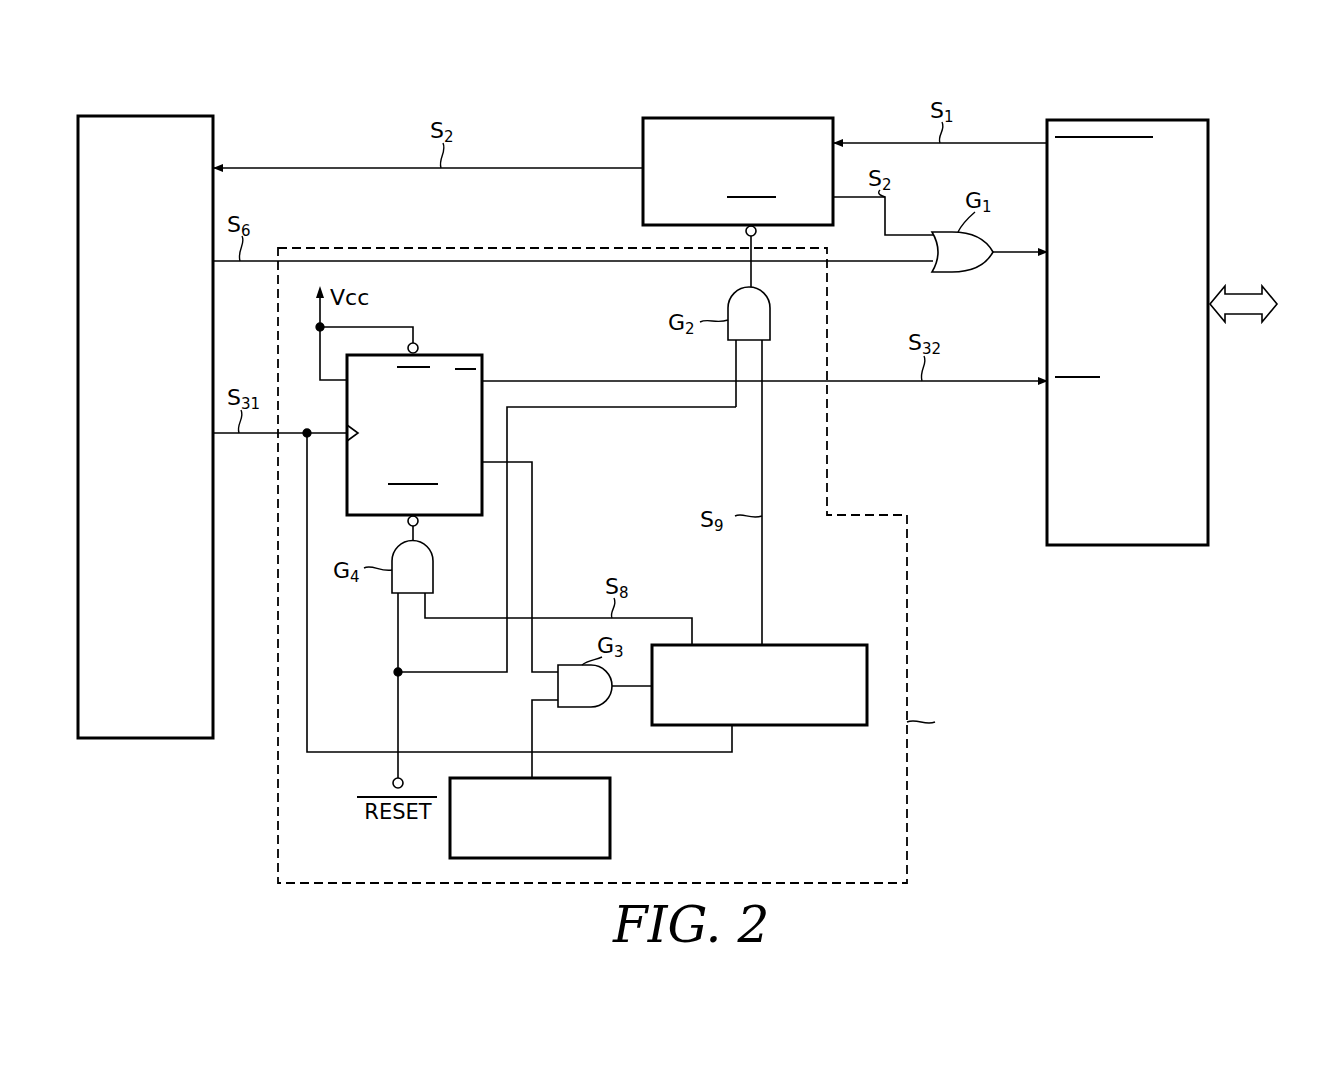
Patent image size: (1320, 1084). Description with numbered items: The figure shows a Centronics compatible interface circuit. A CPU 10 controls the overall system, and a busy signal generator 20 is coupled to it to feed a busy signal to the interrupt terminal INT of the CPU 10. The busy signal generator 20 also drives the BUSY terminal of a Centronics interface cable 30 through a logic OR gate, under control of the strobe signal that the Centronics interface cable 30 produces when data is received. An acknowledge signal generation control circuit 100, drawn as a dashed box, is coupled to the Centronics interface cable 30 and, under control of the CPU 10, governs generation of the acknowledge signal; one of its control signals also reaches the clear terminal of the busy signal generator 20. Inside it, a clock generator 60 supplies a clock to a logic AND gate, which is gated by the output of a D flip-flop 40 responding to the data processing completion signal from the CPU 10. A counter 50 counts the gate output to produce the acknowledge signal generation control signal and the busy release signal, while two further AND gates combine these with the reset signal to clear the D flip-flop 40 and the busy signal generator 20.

The CPU 10 is at (147, 116).
The busy signal generator 20 is at (736, 118).
The Centronics interface cable 30 is at (1128, 120).
The D flip-flop 40 is at (453, 355).
The counter 50 is at (809, 645).
The clock generator 60 is at (610, 818).
The acknowledge signal generation control circuit 100 is at (907, 597).